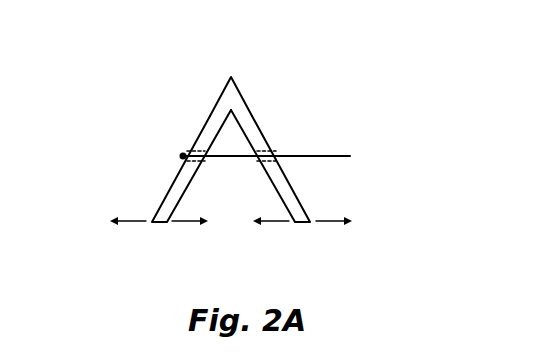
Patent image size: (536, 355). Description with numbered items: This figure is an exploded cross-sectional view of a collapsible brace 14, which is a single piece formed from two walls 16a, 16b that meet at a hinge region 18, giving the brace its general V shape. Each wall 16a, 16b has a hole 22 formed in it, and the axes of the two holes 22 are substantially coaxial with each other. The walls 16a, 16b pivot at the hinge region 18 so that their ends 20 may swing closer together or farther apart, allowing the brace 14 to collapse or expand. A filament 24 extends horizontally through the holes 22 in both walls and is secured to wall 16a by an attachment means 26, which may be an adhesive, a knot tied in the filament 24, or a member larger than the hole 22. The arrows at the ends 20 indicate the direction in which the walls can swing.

The collapsible brace 14 is at (264, 58).
The hinge region 18 is at (201, 85).
The wall 16a is at (170, 193).
The wall 16b is at (290, 190).
The ends 20 is at (148, 242).
The hole 22 is at (285, 134).
The filament 24 is at (322, 156).
The attachment means 26 is at (180, 156).